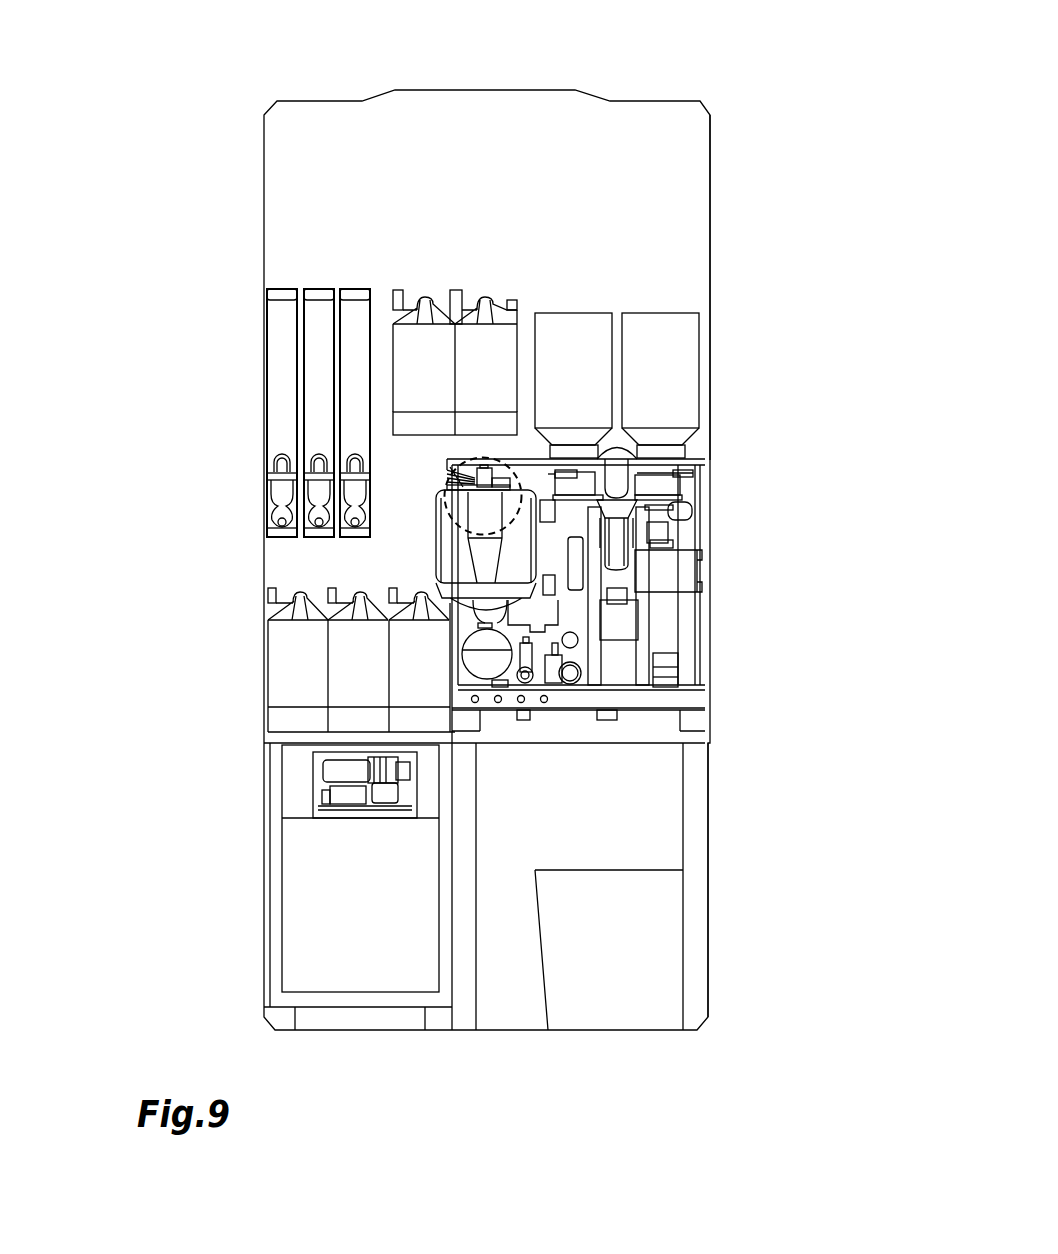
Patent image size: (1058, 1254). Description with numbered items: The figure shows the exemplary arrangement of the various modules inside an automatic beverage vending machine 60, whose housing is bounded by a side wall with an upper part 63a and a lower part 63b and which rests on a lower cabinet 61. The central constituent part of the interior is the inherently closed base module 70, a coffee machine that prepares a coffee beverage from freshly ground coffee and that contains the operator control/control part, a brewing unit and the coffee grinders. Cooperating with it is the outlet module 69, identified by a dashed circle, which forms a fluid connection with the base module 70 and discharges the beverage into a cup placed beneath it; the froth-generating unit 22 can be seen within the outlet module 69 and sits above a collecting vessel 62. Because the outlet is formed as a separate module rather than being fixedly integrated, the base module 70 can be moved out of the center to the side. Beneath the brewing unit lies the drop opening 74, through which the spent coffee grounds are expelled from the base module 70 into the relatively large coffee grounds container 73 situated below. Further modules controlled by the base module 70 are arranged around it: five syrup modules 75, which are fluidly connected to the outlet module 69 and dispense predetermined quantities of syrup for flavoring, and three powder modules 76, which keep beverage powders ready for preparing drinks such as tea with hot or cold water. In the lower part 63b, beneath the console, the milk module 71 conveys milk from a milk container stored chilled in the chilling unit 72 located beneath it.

The beverage preparation machine 60 is at (193, 497).
The lower cabinet 61 is at (263, 915).
The upper side wall 63a is at (690, 293).
The lower part 63b is at (690, 822).
The syrup module 75 is at (480, 368).
The powder module 76 is at (356, 412).
The froth-generating unit 22 is at (500, 476).
The base module 70 is at (678, 530).
The outlet module 69 is at (522, 518).
The collection box 62 is at (515, 597).
The drop opening 74 is at (620, 714).
The milk module 71 is at (325, 787).
The chilling unit 72 is at (365, 884).
The coffee grounds container 73 is at (615, 903).